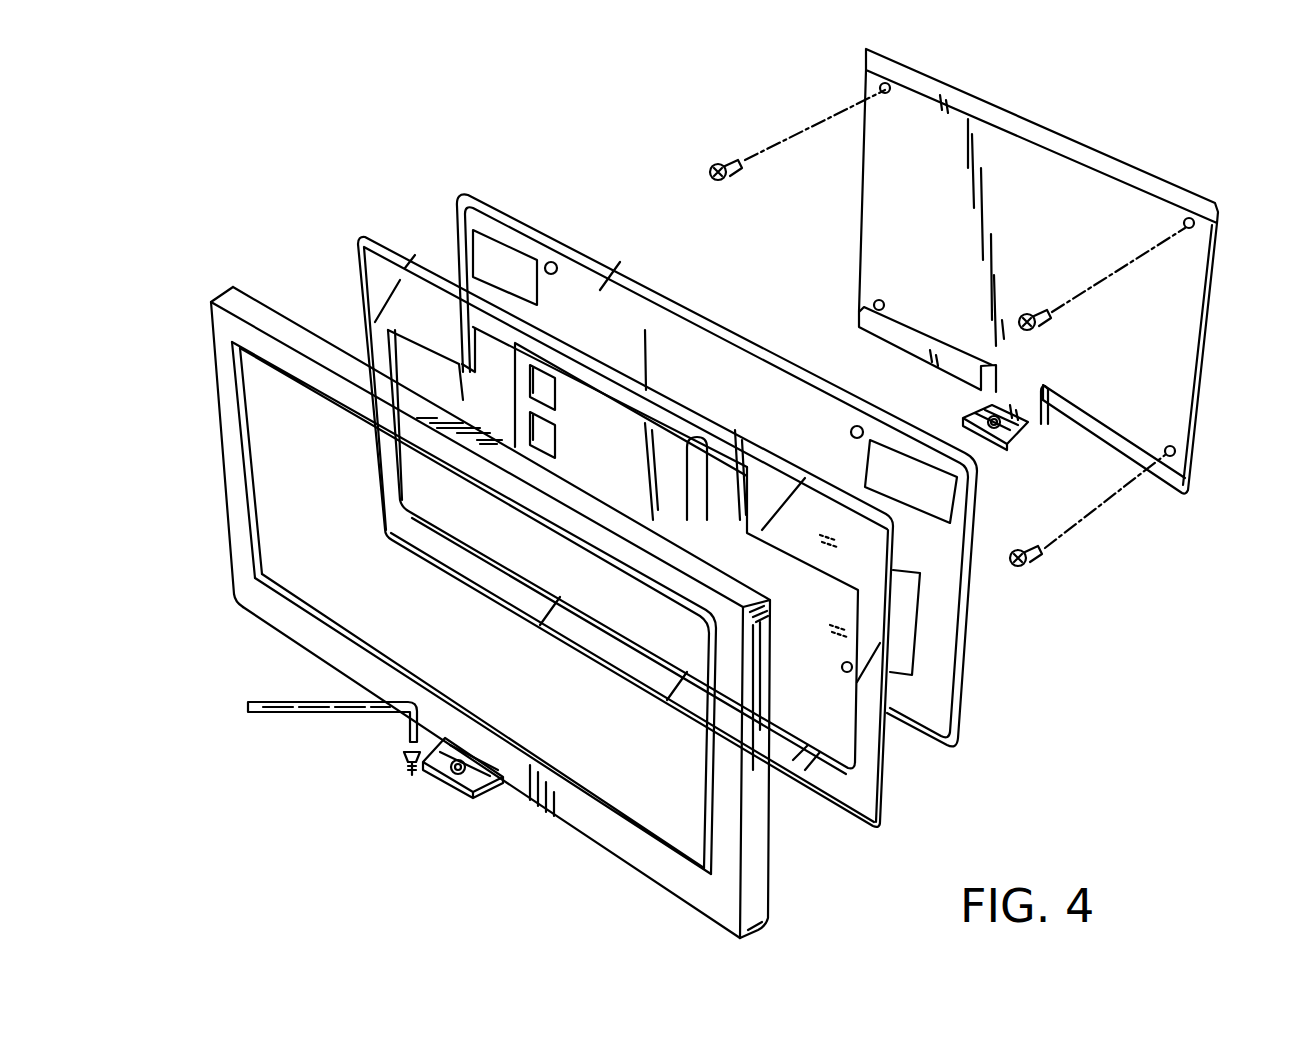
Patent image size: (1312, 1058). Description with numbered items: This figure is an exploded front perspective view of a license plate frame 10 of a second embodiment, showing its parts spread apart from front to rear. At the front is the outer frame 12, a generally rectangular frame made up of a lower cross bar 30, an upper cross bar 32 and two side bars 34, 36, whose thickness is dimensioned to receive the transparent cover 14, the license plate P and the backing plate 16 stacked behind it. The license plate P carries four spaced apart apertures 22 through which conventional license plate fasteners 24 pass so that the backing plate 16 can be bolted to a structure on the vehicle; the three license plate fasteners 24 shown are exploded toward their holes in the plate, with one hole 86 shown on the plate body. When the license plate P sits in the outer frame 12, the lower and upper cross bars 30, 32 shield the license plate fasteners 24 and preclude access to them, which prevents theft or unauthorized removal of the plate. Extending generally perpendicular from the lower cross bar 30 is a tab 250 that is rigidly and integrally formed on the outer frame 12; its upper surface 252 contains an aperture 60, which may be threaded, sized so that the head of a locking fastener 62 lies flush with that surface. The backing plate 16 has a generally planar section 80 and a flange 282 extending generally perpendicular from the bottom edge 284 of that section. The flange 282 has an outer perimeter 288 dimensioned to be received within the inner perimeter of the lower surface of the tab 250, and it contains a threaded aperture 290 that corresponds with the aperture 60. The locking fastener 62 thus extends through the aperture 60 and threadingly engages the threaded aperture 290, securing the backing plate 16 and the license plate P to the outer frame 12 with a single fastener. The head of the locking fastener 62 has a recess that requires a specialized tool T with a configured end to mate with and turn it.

The license plate frame 10 is at (330, 168).
The outer frame 12 is at (479, 612).
The transparent cover 14 is at (878, 798).
The backing plate 16 is at (1077, 271).
The apertures 22 is at (555, 264).
The license plate fasteners 24 is at (718, 163).
The lower cross bar 30 is at (597, 832).
The upper cross bar 32 is at (305, 372).
The side bar 34 is at (735, 830).
The side bar 36 is at (230, 500).
The aperture 60 is at (450, 773).
The locking fastener 62 is at (404, 766).
The planar section 80 is at (1175, 320).
The hole in mounting plate 86 is at (1162, 450).
The tab 250 is at (458, 807).
The upper surface 252 is at (486, 785).
The flange 282 is at (1016, 459).
The bottom edge 284 is at (1030, 446).
The outer perimeter 288 is at (998, 448).
The threaded aperture 290 is at (985, 416).
The license plate P is at (748, 469).
The tool T is at (290, 700).